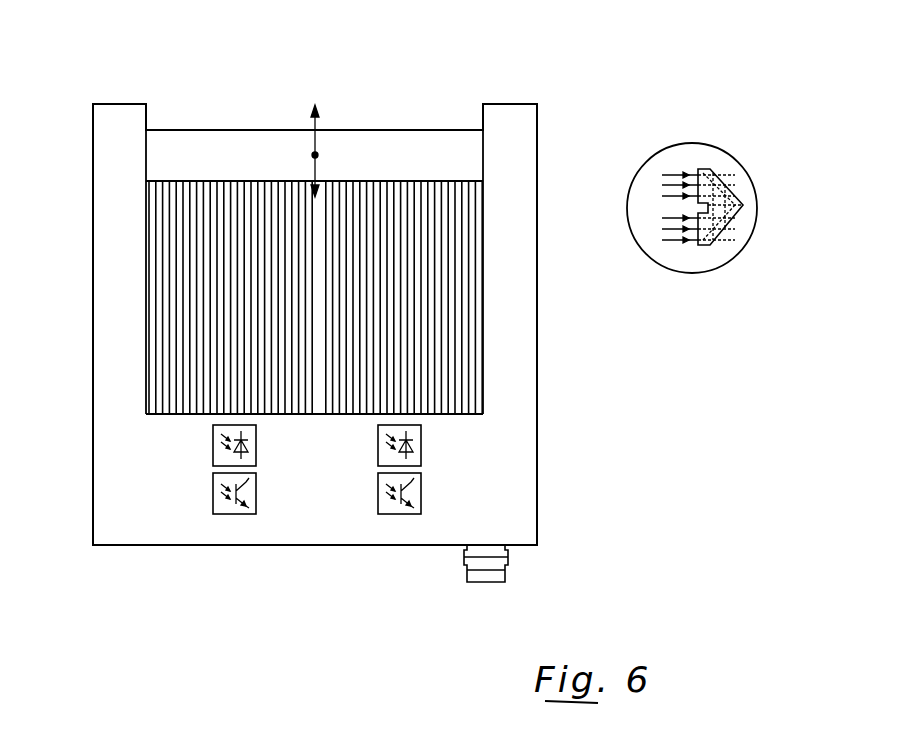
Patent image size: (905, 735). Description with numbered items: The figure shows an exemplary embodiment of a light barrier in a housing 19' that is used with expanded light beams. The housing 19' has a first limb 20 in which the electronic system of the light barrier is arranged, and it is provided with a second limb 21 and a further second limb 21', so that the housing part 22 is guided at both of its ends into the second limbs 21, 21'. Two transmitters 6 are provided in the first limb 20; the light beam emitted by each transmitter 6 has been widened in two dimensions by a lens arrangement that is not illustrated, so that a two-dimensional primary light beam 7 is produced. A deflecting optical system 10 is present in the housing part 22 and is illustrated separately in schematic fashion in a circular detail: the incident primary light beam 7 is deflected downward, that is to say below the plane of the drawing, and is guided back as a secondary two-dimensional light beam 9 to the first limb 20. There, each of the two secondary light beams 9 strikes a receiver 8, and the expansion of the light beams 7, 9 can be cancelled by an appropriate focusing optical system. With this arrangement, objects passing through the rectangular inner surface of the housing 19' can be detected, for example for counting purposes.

The transmitter 6 is at (252, 448).
The primary light beam 7 is at (160, 230).
The receiver 8 is at (252, 498).
The secondary light beam 9 is at (682, 242).
The deflecting optical system 10 is at (720, 187).
The housing 19' is at (379, 324).
The first limb 20 is at (320, 523).
The second limb 21 is at (552, 272).
The further second limb 21' is at (86, 272).
The housing part 22 is at (385, 143).